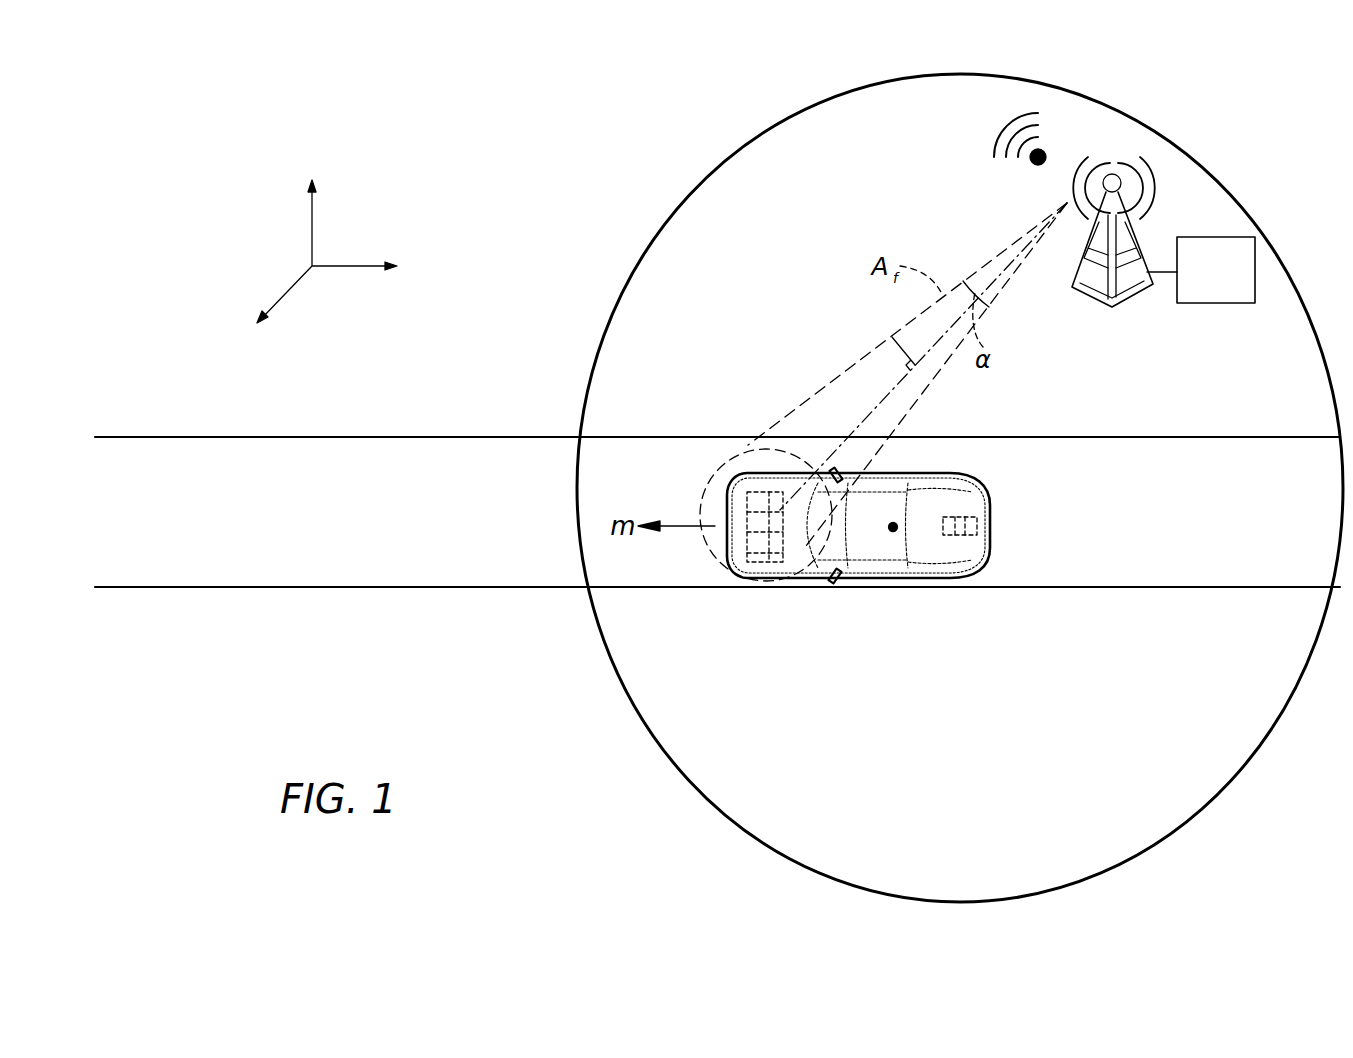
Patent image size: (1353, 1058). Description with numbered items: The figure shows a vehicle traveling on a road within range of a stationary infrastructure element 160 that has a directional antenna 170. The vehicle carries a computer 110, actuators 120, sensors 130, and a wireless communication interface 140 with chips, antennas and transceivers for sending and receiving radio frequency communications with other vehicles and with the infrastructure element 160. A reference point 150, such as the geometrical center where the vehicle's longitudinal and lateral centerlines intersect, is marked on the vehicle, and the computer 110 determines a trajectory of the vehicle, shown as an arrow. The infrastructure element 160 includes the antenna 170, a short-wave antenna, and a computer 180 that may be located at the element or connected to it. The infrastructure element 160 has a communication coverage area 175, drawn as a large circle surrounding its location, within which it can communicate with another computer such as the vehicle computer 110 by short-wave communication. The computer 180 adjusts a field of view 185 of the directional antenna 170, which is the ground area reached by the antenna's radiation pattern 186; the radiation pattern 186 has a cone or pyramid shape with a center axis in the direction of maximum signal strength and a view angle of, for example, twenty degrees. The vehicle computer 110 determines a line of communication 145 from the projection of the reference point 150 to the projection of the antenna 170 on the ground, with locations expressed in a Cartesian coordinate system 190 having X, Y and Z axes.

The computer 110 is at (750, 440).
The actuator 120 is at (977, 588).
The sensor 130 is at (800, 548).
The wireless communication interface 140 is at (702, 588).
The line of communication 145 is at (892, 337).
The reference point 150 is at (893, 530).
The infrastructure element 160 is at (1125, 298).
The antenna 170 is at (1113, 174).
The coverage area 175 is at (688, 196).
The computer 180 is at (1198, 285).
The field of view 185 is at (720, 462).
The radiation pattern 186 is at (822, 388).
The Cartesian coordinate system 190 is at (254, 200).